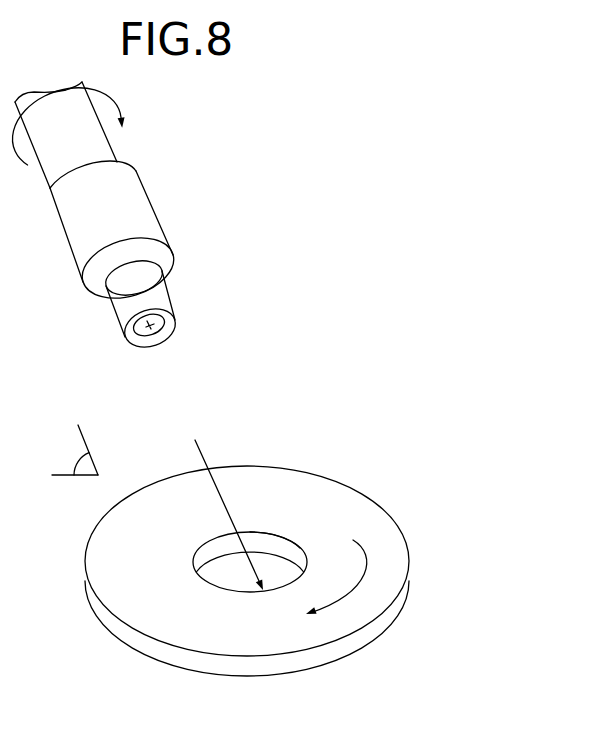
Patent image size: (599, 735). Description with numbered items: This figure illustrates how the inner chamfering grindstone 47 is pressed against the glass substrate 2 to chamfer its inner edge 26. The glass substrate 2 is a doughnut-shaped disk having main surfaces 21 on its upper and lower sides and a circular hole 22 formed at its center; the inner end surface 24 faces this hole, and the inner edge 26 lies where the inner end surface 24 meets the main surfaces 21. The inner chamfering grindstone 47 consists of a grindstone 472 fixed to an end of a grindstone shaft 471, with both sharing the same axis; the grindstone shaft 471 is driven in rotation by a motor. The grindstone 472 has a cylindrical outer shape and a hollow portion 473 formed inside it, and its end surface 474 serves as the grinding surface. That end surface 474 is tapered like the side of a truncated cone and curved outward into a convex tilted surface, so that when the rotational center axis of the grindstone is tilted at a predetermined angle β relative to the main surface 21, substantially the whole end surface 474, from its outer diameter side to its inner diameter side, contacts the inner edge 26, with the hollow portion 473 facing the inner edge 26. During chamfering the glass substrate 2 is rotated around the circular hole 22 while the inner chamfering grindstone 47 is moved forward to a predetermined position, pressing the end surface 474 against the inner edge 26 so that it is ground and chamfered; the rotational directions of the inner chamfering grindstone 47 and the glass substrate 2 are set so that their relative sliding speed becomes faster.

The inner chamfering grindstone 47 is at (178, 157).
The grindstone shaft 471 is at (152, 208).
The grindstone 472 is at (173, 297).
The hollow portion 473 is at (149, 326).
The end surface 474 is at (172, 326).
The glass substrate 2 is at (402, 430).
The main surface 21 is at (413, 557).
The circular hole 22 is at (283, 567).
The inner end surface 24 is at (256, 533).
The inner edge 26 is at (283, 533).